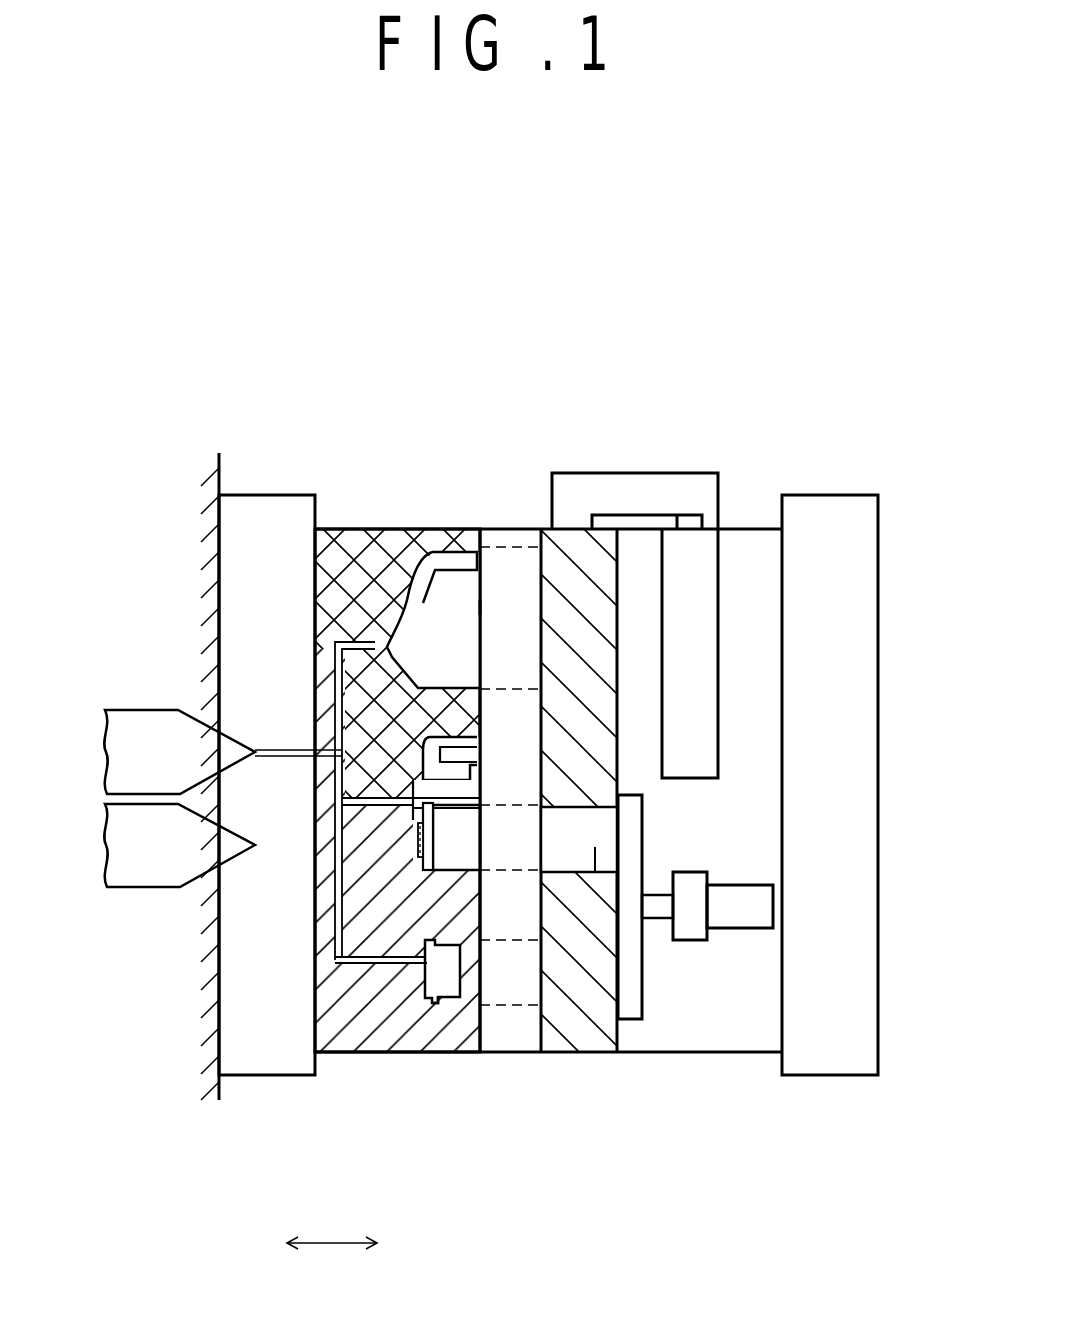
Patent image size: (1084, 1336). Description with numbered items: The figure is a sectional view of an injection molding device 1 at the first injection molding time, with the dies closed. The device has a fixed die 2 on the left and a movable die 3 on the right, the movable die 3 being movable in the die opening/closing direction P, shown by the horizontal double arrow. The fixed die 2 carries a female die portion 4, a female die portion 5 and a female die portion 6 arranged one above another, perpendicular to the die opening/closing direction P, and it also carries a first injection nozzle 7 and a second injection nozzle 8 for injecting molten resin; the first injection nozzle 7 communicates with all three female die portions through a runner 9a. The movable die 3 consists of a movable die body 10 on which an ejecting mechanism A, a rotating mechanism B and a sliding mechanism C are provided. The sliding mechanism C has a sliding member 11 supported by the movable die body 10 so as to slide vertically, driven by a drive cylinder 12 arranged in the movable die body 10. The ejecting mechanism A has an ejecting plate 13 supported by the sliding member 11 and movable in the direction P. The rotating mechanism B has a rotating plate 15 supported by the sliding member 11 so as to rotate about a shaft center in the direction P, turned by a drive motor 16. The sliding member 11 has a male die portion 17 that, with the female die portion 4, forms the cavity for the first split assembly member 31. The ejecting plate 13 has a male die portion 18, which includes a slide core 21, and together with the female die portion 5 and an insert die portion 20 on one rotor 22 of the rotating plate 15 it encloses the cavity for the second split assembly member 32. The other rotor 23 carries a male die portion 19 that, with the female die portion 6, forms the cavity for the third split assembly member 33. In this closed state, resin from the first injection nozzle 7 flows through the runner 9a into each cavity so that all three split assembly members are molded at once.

The injection molding device 1 is at (606, 300).
The fixed die 2 is at (347, 505).
The movable die 3 is at (742, 526).
The female die portion 4 is at (425, 585).
The female die portion 5 is at (440, 754).
The female die portion 6 is at (433, 963).
The first injection nozzle 7 is at (160, 768).
The second injection nozzle 8 is at (160, 861).
The runner 9a is at (335, 652).
The movable die body 10 is at (705, 942).
The sliding member 11 is at (578, 1005).
The drive cylinder 12 is at (718, 601).
The ejecting plate 13 is at (497, 1035).
The rotating plate 15 is at (632, 1020).
The drive motor 16 is at (738, 930).
The male die portion 17 is at (438, 600).
The male die portion 18 is at (440, 808).
The male die portion 19 is at (440, 1003).
The insert die portion 20 is at (417, 827).
The slide core 21 is at (530, 526).
The rotor 22 is at (595, 847).
The rotor 23 is at (560, 980).
The first split assembly member 31 is at (387, 637).
The second split assembly member 32 is at (420, 830).
The third split assembly member 33 is at (425, 955).
The ejecting mechanism A is at (481, 607).
The rotating mechanism B is at (689, 945).
The sliding mechanism C is at (658, 470).
The die opening/closing direction P is at (332, 1225).